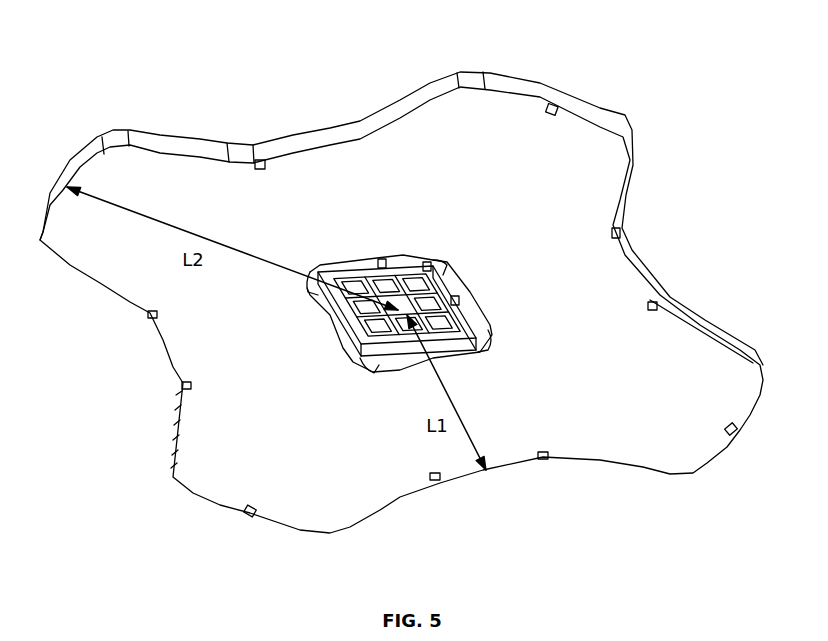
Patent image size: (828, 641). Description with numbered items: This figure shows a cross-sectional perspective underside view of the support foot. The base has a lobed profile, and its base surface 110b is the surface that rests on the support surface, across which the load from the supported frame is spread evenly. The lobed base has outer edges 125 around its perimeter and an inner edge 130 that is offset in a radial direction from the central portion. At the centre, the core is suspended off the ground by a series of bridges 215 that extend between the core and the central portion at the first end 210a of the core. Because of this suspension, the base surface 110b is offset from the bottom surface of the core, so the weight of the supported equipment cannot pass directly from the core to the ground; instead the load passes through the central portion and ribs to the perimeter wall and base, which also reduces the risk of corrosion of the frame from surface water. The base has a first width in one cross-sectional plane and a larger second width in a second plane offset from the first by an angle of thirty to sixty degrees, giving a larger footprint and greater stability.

The base surface 110b is at (630, 292).
The outer edges 125 is at (600, 127).
The first end 210a is at (259, 342).
The bridges 215 is at (401, 161).
The inner edge 130 is at (400, 362).